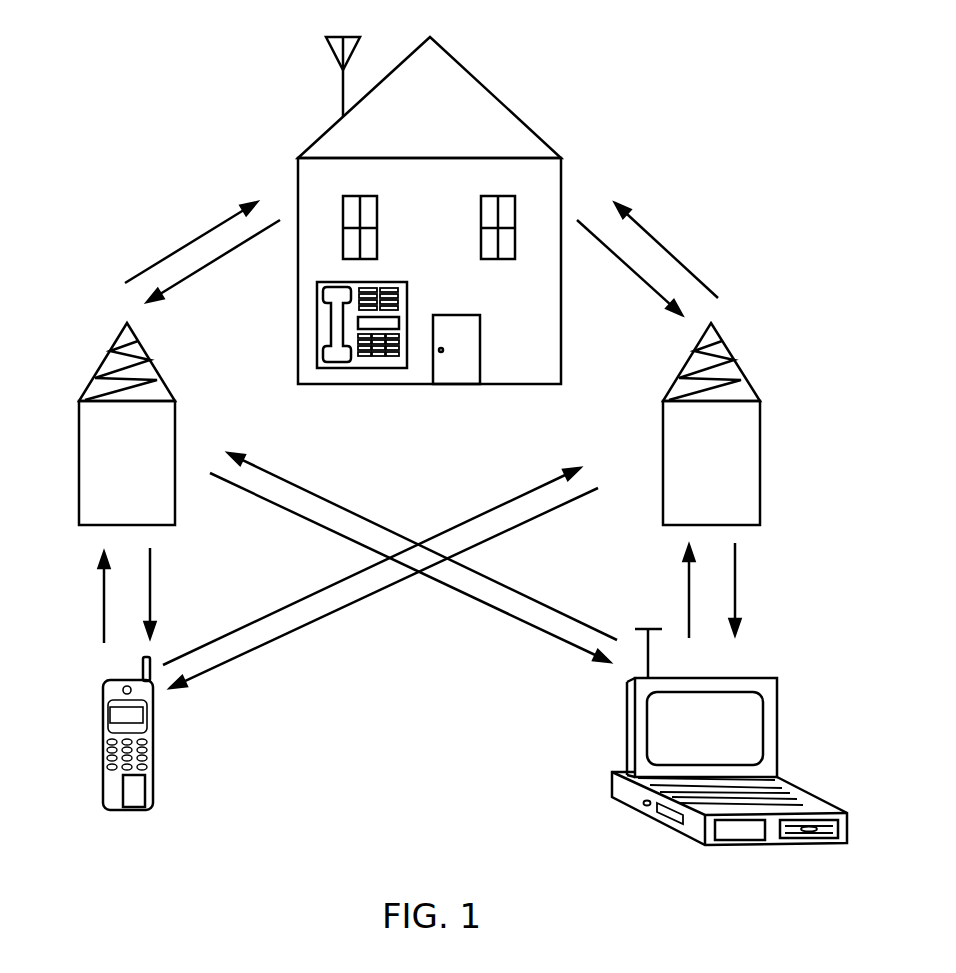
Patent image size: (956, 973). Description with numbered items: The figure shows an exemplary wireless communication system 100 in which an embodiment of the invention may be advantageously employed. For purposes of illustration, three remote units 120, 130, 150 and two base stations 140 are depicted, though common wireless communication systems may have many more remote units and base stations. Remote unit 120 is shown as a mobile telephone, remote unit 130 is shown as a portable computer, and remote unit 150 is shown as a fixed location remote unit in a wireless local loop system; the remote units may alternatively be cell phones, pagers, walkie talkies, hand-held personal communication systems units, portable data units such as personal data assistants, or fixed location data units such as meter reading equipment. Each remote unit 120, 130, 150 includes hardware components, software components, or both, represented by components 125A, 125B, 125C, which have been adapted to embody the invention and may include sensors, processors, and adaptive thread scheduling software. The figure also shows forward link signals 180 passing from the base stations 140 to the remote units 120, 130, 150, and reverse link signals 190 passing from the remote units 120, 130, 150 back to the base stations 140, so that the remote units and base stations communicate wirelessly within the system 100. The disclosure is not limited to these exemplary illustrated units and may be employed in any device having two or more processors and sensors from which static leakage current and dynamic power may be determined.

The wireless communication system 100 is at (443, 451).
The remote unit 120 is at (99, 757).
The component 125A is at (137, 795).
The component 125B is at (387, 371).
The component 125C is at (747, 830).
The remote unit 130 is at (729, 760).
The base station 140 is at (104, 356).
The remote unit 150 is at (334, 353).
The forward link signal 180 is at (195, 240).
The reverse link signal 190 is at (203, 270).